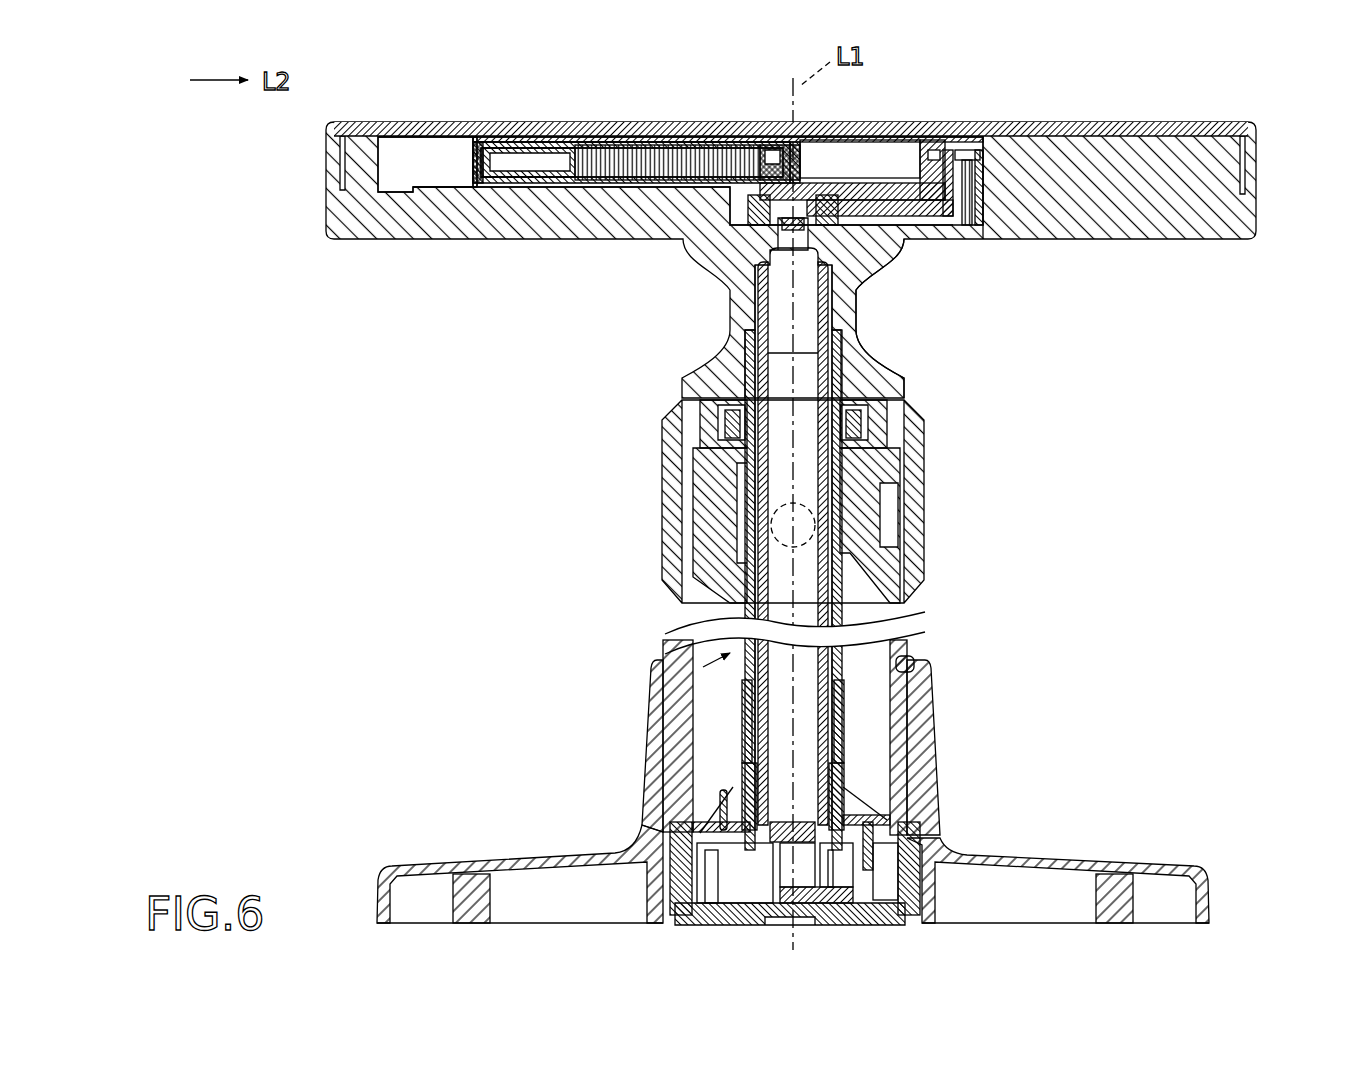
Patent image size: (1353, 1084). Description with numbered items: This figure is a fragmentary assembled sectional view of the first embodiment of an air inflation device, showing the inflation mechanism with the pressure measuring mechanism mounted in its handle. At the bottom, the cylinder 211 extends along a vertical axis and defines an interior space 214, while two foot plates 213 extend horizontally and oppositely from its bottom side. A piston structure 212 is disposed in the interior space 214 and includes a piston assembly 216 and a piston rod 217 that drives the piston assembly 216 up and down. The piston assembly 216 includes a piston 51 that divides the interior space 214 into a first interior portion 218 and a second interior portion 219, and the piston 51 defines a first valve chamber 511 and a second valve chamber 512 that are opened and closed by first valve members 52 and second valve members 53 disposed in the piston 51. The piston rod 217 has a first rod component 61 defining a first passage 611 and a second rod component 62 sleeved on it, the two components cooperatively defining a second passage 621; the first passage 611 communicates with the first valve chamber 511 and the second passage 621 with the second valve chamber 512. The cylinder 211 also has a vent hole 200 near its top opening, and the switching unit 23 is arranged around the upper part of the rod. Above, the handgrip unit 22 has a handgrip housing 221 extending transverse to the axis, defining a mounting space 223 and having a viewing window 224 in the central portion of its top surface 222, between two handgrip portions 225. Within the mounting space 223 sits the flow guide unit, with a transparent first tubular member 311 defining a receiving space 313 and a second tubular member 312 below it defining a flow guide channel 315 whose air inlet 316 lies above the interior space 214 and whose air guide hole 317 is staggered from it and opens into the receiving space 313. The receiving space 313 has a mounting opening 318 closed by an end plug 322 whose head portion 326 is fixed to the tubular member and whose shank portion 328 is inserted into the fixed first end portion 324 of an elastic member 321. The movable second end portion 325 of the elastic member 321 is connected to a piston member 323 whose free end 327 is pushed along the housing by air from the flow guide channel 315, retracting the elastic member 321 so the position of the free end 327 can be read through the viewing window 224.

The handgrip unit 22 is at (300, 172).
The handgrip housing 221 is at (1093, 230).
The top surface 222 is at (1147, 122).
The mounting space 223 is at (397, 187).
The viewing window 224 is at (890, 130).
The handgrip portions 225 is at (553, 225).
The switching unit 23 is at (665, 495).
The vent hole 200 is at (668, 540).
The cylinder 211 is at (930, 712).
The piston structure 212 is at (620, 736).
The foot plates 213 is at (493, 862).
The interior space 214 is at (912, 676).
The piston assembly 216 is at (703, 797).
The piston rod 217 is at (725, 688).
The first interior portion 218 is at (872, 770).
The second interior portion 219 is at (870, 903).
The first tubular member 311 is at (865, 150).
The second tubular member 312 is at (867, 212).
The receiving space 313 is at (823, 160).
The flow guide channel 315 is at (897, 216).
The air inlet 316 is at (772, 216).
The air guide hole 317 is at (942, 160).
The mounting opening 318 is at (470, 175).
The elastic member 321 is at (605, 162).
The end plug 322 is at (631, 96).
The piston member 323 is at (745, 160).
The first end portion 324 is at (540, 148).
The second end portion 325 is at (665, 155).
The head portion 326 is at (473, 150).
The free end 327 is at (792, 158).
The shank portion 328 is at (535, 147).
The piston 51 is at (700, 900).
The first valve chamber 511 is at (738, 888).
The second valve chamber 512 is at (905, 878).
The first valve members 52 is at (715, 835).
The second valve members 53 is at (880, 810).
The first rod component 61 is at (830, 574).
The first passage 611 is at (803, 610).
The second rod component 62 is at (770, 523).
The second passage 621 is at (832, 490).